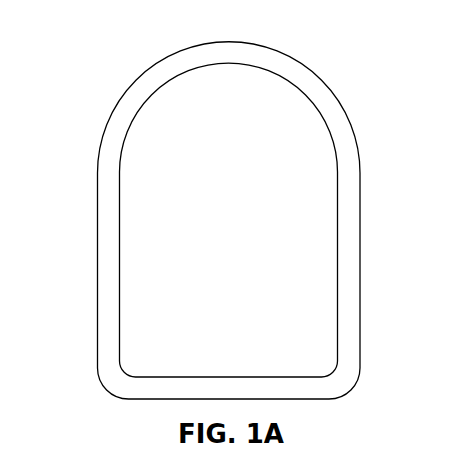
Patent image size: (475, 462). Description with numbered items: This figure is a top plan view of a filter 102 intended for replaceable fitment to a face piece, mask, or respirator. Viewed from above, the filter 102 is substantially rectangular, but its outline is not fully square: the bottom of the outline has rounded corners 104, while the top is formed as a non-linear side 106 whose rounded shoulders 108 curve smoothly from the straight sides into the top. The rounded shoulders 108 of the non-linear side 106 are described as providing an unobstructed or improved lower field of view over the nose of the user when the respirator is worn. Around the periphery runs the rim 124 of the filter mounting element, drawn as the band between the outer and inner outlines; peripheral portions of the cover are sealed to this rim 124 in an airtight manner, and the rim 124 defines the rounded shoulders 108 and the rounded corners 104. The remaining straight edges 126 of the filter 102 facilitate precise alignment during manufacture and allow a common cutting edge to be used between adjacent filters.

The filter 102 is at (122, 30).
The rounded corners 104 is at (112, 386).
The non-linear side 106 is at (307, 74).
The rounded shoulders 108 is at (118, 95).
The rim 124 is at (108, 207).
The straight edges 126 is at (97, 258).